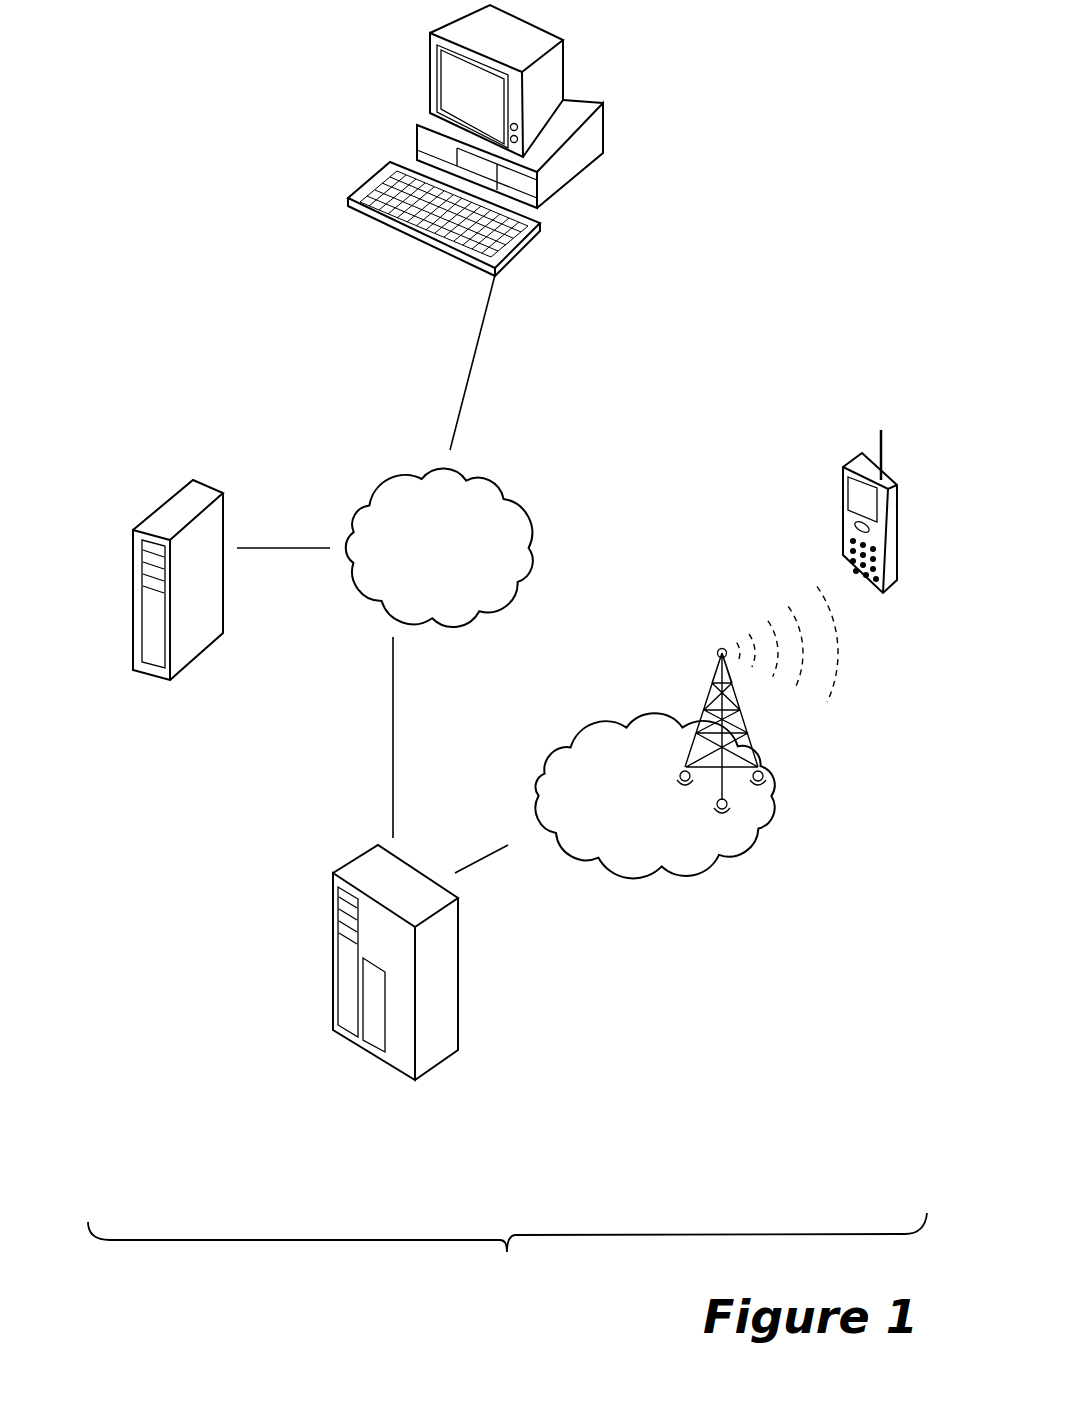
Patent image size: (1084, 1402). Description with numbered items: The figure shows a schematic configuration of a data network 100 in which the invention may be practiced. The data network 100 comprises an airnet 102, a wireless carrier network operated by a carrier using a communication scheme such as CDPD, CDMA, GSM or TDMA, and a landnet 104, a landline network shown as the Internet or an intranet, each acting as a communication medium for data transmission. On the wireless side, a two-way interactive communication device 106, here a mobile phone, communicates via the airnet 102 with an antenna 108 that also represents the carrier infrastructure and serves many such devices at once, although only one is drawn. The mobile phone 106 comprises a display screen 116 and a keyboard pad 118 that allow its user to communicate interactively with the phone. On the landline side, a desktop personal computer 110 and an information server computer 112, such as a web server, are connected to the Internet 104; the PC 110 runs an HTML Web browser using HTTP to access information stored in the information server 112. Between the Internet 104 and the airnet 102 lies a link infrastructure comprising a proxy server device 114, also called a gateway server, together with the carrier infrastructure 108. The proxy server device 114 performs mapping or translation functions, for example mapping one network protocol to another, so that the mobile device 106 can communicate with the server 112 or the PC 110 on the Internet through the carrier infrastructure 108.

The data network 100 is at (507, 1249).
The airnet 102 is at (797, 801).
The landnet 104 is at (412, 468).
The two-way interactive communication device 106 is at (810, 516).
The antenna 108 is at (717, 658).
The desktop personal computer 110 is at (573, 168).
The information server computer 112 is at (162, 504).
The proxy server device 114 is at (332, 972).
The display screen 116 is at (933, 464).
The keyboard pad 118 is at (857, 592).